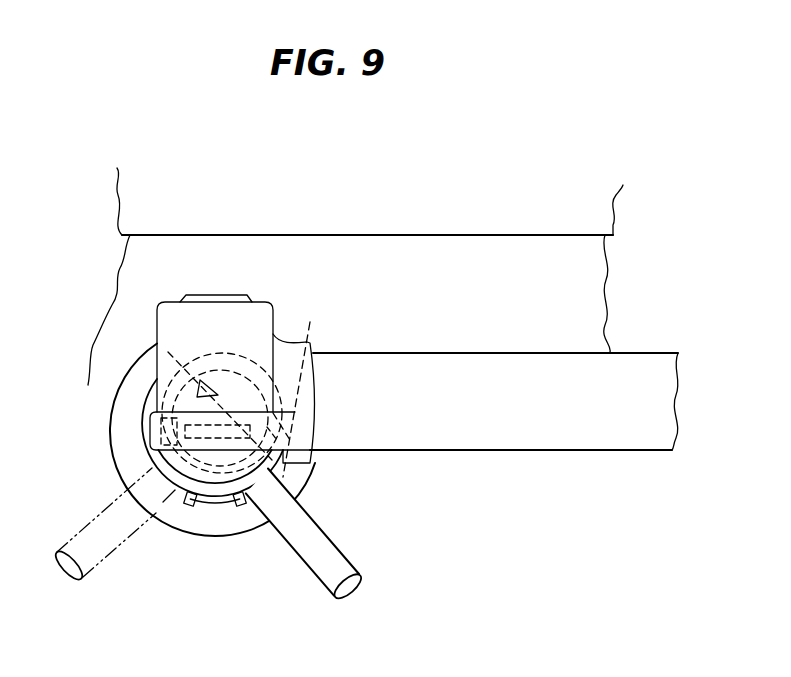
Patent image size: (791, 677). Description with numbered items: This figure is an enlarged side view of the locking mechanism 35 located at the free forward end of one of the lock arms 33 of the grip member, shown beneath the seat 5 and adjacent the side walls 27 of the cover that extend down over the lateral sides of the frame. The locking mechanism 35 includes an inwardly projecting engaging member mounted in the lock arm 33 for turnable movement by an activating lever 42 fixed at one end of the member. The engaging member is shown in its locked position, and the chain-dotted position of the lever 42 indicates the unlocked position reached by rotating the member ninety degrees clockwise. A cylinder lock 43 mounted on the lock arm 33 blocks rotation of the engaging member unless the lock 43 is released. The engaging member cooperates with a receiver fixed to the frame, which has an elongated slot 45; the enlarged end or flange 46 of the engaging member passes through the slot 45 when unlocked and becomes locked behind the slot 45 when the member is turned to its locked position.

The seat 5 is at (135, 200).
The side walls 27 is at (132, 283).
The cylinder lock 43 is at (213, 296).
The elongated slot 45 is at (160, 350).
The flange 46 is at (309, 384).
The lock arms 33 is at (437, 372).
The activating lever 42 is at (340, 557).
The locking mechanism 35 is at (207, 553).